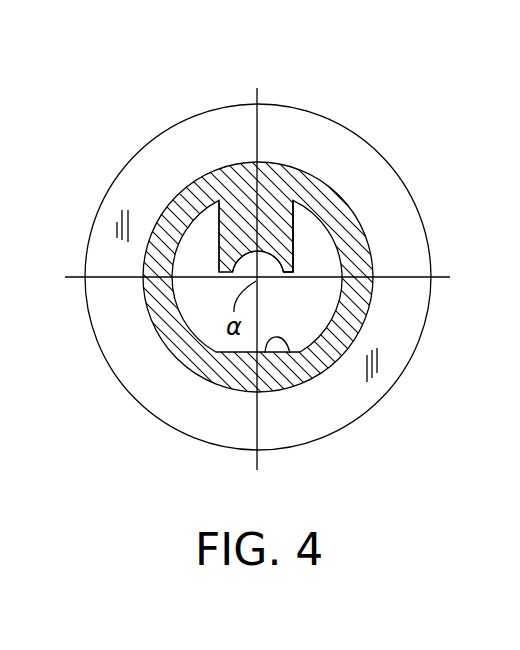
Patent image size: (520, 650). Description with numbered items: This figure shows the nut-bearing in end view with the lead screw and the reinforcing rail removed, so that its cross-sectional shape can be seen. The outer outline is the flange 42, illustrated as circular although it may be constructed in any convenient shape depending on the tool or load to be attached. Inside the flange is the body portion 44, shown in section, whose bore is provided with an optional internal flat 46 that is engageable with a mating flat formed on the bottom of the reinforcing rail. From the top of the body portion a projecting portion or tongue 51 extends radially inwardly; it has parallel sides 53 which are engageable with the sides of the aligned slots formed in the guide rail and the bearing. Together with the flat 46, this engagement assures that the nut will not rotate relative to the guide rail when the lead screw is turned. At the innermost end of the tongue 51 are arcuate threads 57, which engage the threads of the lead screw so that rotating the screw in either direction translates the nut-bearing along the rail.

The flange 42 is at (296, 107).
The body portion 44 is at (208, 176).
The internal flat 46 is at (290, 353).
The projecting portion or tongue 51 is at (300, 228).
The parallel sides 53 is at (210, 240).
The arcuate threads 57 is at (240, 283).